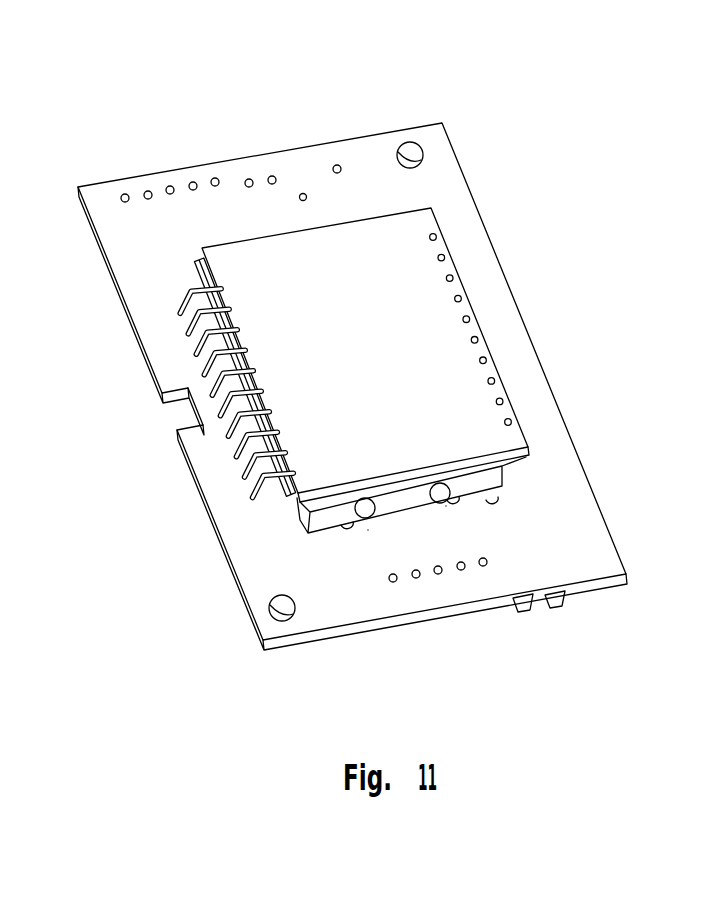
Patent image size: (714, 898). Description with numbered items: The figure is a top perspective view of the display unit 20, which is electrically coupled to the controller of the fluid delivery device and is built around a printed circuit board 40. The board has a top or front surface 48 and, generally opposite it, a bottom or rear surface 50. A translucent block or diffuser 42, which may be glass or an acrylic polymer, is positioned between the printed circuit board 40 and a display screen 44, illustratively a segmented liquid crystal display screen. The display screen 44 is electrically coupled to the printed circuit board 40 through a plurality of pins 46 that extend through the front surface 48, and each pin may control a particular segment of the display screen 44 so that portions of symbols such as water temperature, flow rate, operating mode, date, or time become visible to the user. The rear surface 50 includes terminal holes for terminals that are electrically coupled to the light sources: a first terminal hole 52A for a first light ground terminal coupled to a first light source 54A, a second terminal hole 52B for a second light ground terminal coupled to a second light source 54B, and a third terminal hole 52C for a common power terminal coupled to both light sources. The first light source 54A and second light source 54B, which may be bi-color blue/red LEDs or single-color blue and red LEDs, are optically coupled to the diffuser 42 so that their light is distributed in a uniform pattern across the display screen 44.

The display unit 20 is at (355, 355).
The front surface of printed circuit board 48 is at (447, 183).
The rear surface of printed circuit board 50 is at (140, 330).
The printed circuit board 40 is at (362, 355).
The display screen 44 is at (460, 362).
The pins 46 is at (242, 444).
The diffuser 42 is at (422, 572).
The first terminal hole 52A is at (360, 518).
The second terminal hole 52B is at (434, 512).
The third terminal hole 52C is at (492, 506).
The first light source 54A is at (368, 530).
The second light source 54B is at (446, 506).